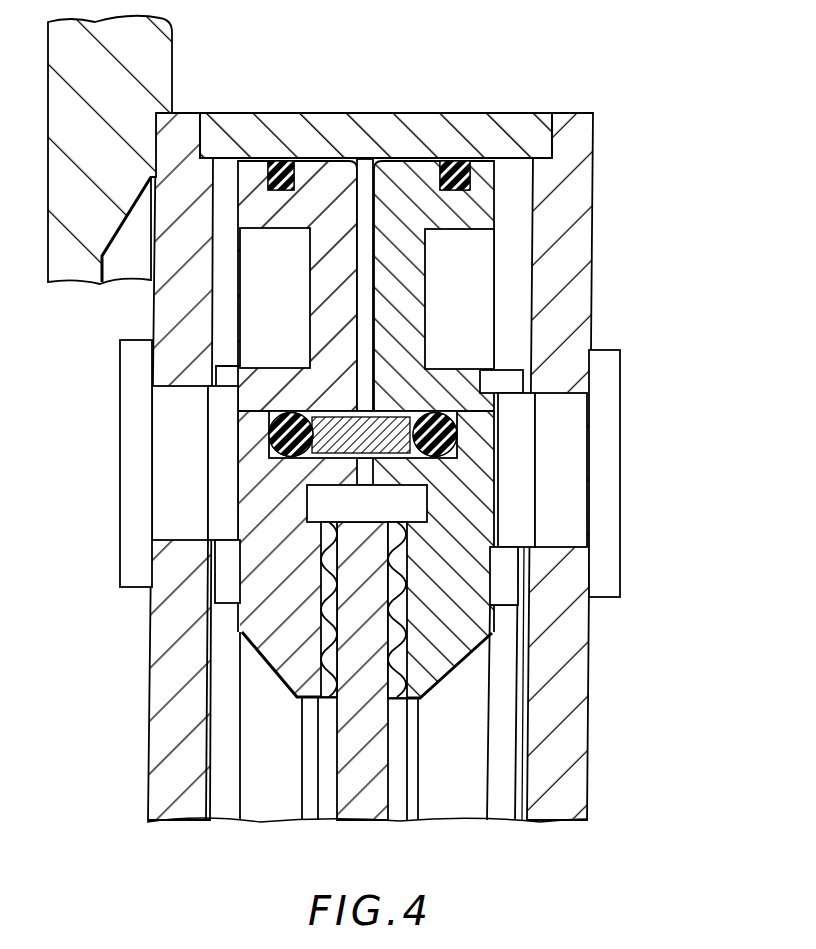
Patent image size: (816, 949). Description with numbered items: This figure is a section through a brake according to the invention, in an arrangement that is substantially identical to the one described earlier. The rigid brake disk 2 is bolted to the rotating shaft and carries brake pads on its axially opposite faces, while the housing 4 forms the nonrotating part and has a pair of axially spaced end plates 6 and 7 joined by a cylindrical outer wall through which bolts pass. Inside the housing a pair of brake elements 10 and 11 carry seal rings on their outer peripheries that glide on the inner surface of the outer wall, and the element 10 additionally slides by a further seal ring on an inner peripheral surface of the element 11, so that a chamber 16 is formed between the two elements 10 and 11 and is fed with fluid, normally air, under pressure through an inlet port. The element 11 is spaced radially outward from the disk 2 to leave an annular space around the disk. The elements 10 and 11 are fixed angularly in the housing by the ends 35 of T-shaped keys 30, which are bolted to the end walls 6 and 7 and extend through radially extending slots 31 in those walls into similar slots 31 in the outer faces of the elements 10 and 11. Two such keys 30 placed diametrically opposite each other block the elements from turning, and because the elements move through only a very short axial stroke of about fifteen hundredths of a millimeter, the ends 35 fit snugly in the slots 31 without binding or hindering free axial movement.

The brake disk 2 is at (350, 765).
The housing 4 is at (128, 322).
The end plate 6 is at (160, 745).
The end plate 7 is at (430, 641).
The brake element 10 is at (290, 628).
The brake element 11 is at (545, 708).
The chamber 16 is at (368, 278).
The key 30 is at (163, 452).
The slot 31 is at (243, 392).
The end of key 35 is at (212, 498).